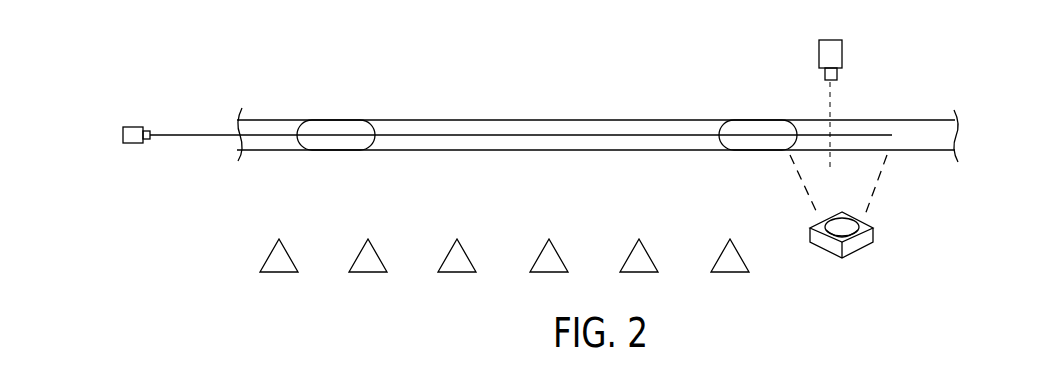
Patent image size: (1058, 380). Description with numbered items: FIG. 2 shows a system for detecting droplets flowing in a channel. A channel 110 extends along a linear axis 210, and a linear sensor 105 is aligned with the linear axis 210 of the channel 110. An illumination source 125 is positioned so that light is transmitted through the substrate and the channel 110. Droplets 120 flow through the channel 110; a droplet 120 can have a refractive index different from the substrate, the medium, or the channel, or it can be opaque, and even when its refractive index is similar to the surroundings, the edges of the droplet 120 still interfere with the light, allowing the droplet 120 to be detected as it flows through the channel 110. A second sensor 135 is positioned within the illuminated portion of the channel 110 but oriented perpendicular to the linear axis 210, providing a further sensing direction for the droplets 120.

The linear sensor 105 is at (122, 134).
The channel 110 is at (237, 135).
The droplet 120 is at (757, 130).
The illumination source 125 is at (875, 240).
The second sensor 135 is at (842, 56).
The linear axis 210 is at (448, 133).